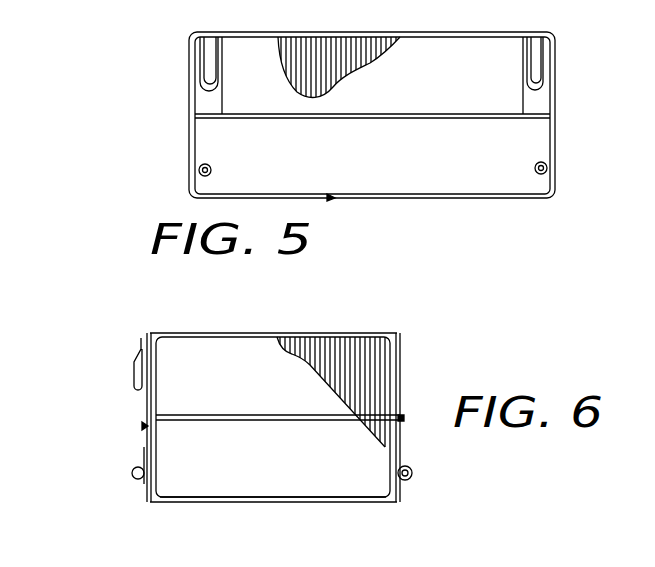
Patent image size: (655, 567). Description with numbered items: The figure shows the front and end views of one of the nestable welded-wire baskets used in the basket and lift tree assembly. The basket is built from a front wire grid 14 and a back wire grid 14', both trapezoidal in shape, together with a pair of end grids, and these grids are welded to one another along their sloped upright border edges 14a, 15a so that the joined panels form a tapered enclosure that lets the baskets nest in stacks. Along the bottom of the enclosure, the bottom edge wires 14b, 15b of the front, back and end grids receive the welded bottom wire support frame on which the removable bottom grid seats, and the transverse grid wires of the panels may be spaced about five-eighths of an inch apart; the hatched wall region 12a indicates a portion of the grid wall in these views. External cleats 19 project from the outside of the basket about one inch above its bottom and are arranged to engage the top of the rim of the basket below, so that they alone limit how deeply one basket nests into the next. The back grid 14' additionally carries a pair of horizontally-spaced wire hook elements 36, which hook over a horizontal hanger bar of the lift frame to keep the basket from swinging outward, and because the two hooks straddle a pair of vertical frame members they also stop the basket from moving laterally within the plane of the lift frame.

In FIG. 5, the wall portion of tray 12a is at (283, 73).
In FIG. 6, the front wire grid 14 is at (305, 437).
In FIG. 5, the sloped upright border edges 14a is at (556, 112).
In FIG. 6, the sloped upright border edges 14a is at (401, 357).
In FIG. 5, the bottom edge wires 14b is at (475, 198).
In FIG. 5, the back wire grid 14' is at (350, 226).
In FIG. 6, the back wire grid 14' is at (115, 411).
In FIG. 6, the sloped upright border edges 15a is at (157, 378).
In FIG. 6, the bottom edge wires 15b is at (220, 502).
In FIG. 5, the external cleats 19 is at (209, 167).
In FIG. 6, the external cleats 19 is at (412, 466).
In FIG. 5, the wire hook elements 36 is at (222, 63).